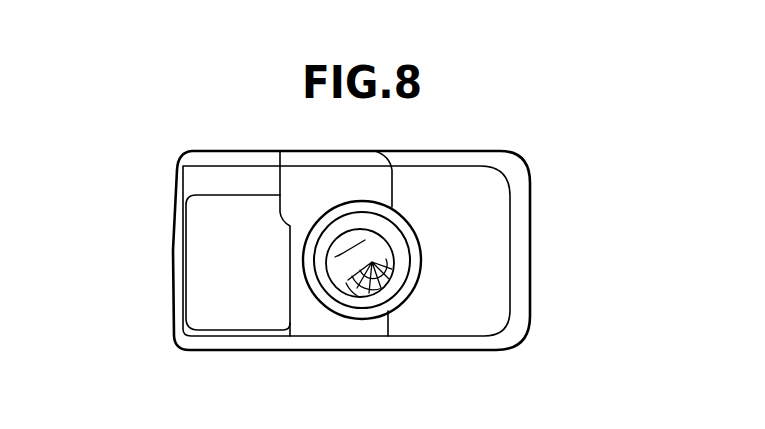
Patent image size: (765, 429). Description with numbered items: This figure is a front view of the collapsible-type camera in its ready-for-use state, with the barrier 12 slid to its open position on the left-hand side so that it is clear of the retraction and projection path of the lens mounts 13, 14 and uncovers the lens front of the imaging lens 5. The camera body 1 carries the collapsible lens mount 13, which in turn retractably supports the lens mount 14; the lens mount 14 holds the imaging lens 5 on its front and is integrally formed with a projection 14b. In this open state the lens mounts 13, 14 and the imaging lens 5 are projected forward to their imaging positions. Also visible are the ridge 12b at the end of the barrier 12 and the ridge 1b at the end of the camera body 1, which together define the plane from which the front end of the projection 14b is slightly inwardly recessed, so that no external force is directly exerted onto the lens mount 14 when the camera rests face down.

The camera body 1 is at (447, 152).
The ridge 1b is at (410, 265).
The imaging lens 5 is at (335, 287).
The barrier 12 is at (220, 300).
The ridge 12b is at (283, 252).
The lens mount 13 is at (376, 311).
The lens mount 14 is at (353, 318).
The projection 14b is at (400, 247).